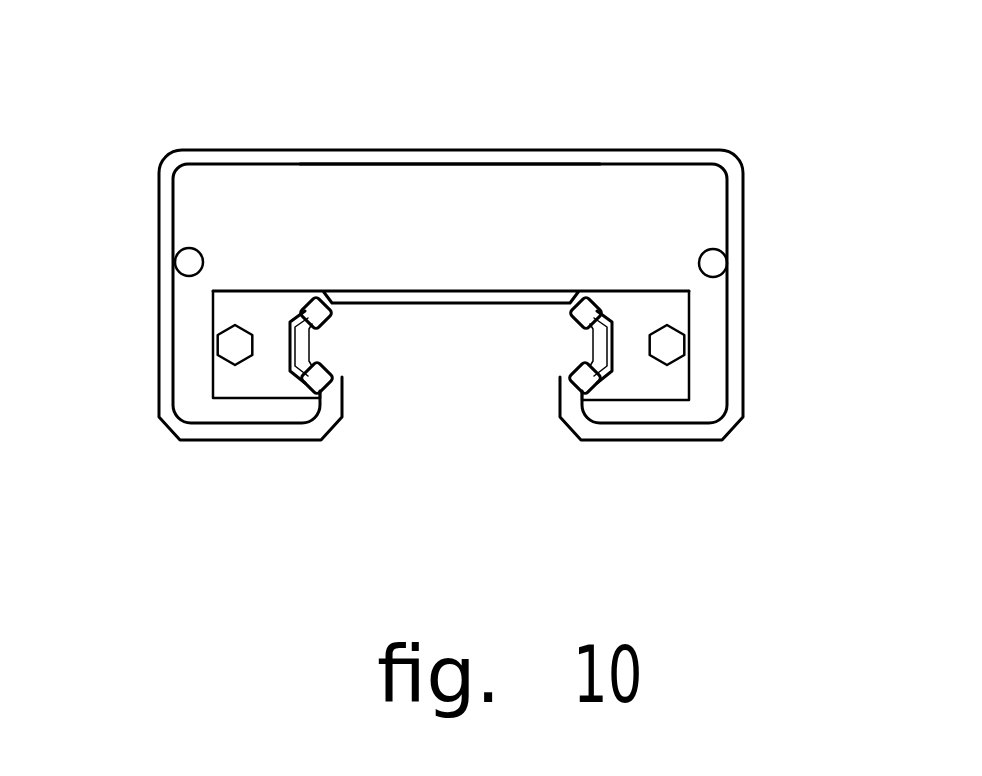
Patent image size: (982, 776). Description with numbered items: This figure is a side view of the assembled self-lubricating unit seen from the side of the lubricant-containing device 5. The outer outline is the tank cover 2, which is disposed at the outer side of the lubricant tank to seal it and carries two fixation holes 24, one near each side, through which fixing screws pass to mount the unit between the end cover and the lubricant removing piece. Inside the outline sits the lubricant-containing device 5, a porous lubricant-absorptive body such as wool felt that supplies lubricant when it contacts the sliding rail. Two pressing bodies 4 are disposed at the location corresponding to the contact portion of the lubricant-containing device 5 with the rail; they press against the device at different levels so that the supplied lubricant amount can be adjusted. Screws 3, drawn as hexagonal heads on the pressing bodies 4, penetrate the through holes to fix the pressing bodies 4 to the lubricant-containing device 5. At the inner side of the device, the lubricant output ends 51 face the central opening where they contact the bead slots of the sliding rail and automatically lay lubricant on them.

The tank cover 2 is at (652, 140).
The lubricant-containing device 5 is at (402, 227).
The fixation holes 24 is at (186, 263).
The pressing bodies 4 is at (280, 375).
The screws 3 is at (232, 348).
The lubricant output end 51 is at (317, 305).